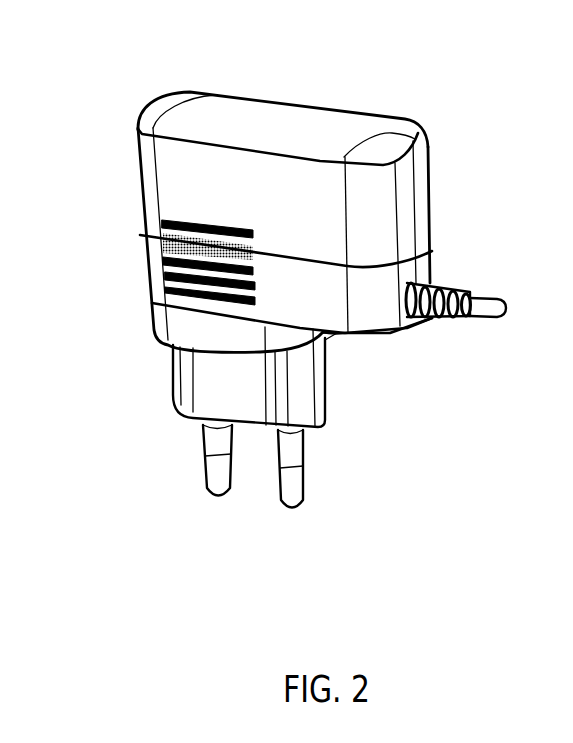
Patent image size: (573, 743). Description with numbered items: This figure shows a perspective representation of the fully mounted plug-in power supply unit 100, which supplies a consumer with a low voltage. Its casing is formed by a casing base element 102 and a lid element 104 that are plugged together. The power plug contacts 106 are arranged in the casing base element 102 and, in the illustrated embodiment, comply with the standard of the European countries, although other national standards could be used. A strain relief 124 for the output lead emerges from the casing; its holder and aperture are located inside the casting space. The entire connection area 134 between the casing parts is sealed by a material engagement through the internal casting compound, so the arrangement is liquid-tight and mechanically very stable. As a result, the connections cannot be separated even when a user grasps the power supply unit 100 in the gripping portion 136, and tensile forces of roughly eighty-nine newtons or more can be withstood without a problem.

The power supply unit 100 is at (100, 466).
The casing base element 102 is at (378, 328).
The lid element 104 is at (232, 103).
The power plug contacts 106 is at (293, 492).
The strain relief 124 is at (488, 298).
The connection area 134 is at (142, 213).
The gripping portion 136 is at (163, 289).